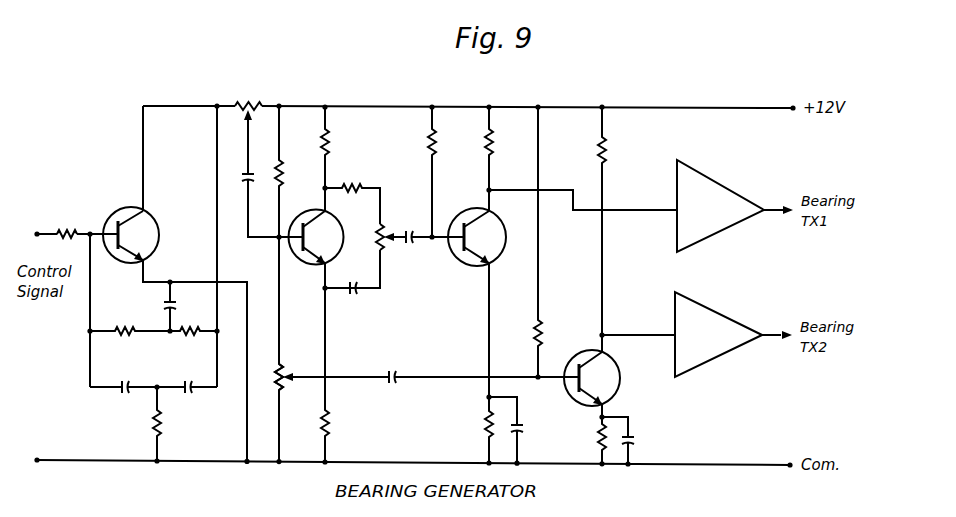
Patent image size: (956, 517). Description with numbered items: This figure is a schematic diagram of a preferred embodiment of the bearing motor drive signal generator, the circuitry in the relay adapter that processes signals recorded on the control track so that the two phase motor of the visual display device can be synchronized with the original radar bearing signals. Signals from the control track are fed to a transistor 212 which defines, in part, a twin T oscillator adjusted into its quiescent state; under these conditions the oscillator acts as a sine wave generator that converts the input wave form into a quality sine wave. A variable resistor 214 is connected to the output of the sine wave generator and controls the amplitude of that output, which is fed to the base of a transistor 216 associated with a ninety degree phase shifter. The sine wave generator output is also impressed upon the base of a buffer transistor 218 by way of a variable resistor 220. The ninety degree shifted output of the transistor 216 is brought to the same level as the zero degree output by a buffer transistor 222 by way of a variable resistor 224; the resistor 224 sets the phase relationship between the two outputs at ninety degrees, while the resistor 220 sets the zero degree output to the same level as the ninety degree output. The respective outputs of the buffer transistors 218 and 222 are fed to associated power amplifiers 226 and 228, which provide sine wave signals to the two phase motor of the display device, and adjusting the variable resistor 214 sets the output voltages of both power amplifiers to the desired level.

The transistor 212 is at (157, 226).
The variable resistor 214 is at (258, 93).
The transistor 216 is at (343, 229).
The buffer transistor 218 is at (614, 360).
The variable resistor 220 is at (282, 362).
The buffer transistor 222 is at (460, 260).
The variable resistor 224 is at (381, 220).
The power amplifier 226 is at (700, 302).
The power amplifier 228 is at (700, 173).